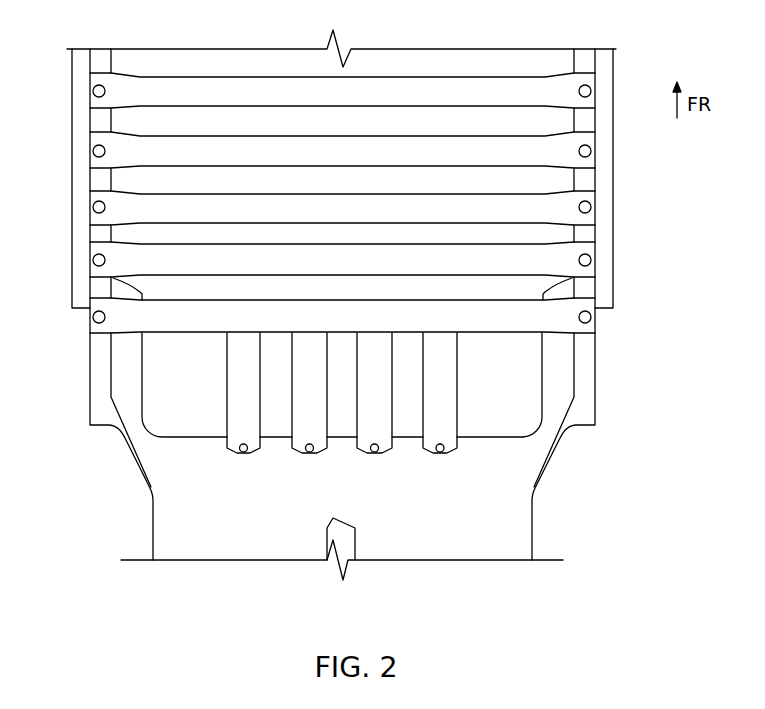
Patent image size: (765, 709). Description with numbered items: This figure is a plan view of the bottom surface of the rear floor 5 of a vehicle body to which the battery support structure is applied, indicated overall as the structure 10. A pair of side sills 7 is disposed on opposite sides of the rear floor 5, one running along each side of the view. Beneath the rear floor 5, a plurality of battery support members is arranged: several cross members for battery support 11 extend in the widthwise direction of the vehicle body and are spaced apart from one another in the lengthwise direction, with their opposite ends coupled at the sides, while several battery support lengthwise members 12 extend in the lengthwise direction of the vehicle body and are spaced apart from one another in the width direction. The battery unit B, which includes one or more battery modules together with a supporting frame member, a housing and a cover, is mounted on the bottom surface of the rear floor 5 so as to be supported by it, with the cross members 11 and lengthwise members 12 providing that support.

The rear floor 5 is at (247, 540).
The side sill 7 is at (72, 238).
The apparatus 10 is at (70, 342).
The cross member for battery support 11 is at (522, 85).
The battery support lengthwise member 12 is at (240, 416).
The battery unit B is at (518, 422).